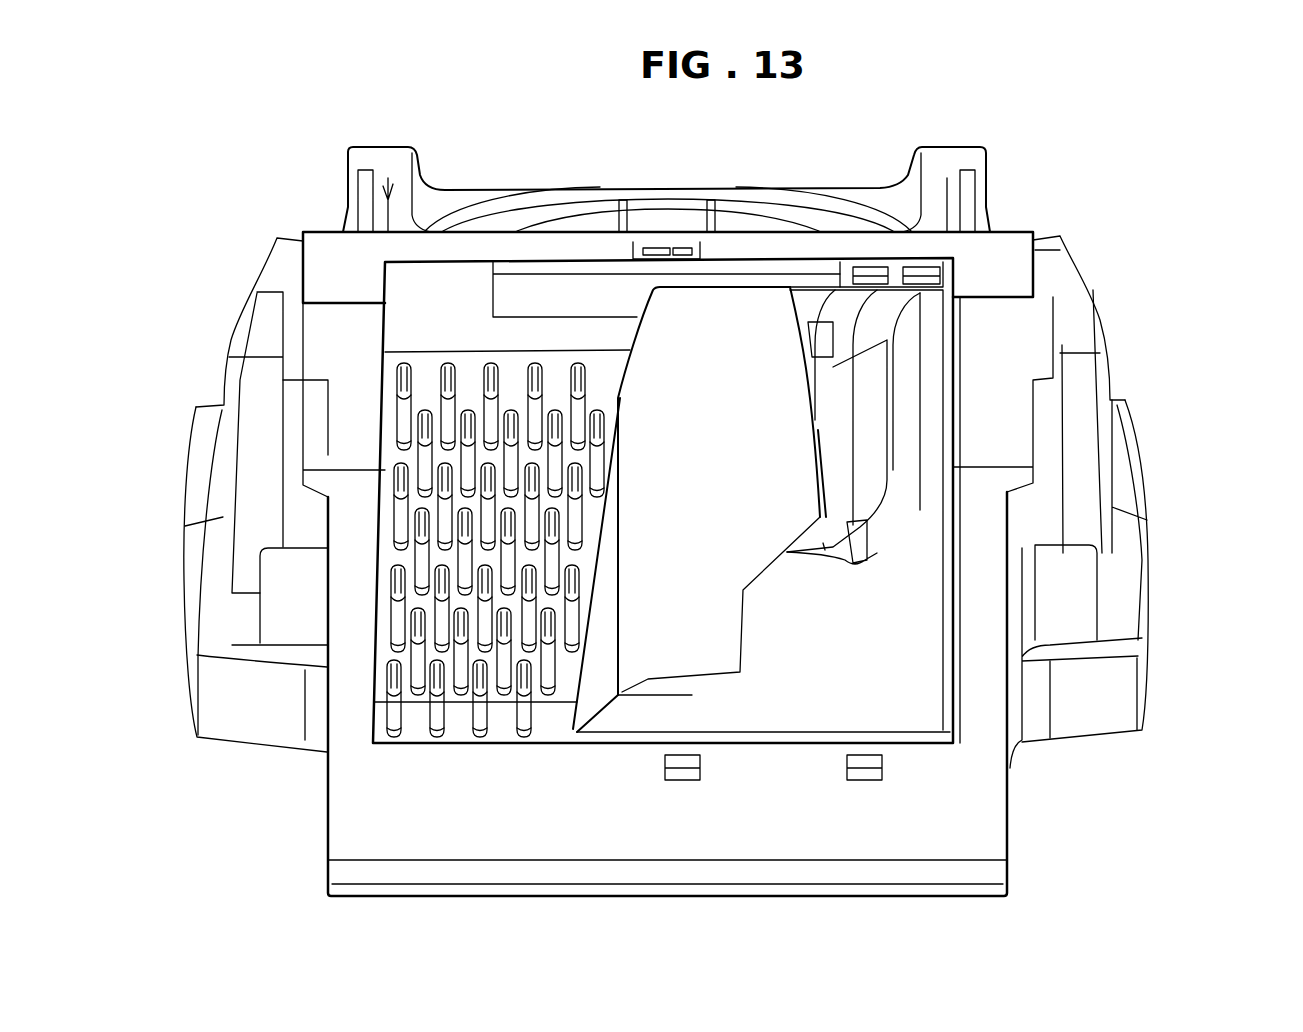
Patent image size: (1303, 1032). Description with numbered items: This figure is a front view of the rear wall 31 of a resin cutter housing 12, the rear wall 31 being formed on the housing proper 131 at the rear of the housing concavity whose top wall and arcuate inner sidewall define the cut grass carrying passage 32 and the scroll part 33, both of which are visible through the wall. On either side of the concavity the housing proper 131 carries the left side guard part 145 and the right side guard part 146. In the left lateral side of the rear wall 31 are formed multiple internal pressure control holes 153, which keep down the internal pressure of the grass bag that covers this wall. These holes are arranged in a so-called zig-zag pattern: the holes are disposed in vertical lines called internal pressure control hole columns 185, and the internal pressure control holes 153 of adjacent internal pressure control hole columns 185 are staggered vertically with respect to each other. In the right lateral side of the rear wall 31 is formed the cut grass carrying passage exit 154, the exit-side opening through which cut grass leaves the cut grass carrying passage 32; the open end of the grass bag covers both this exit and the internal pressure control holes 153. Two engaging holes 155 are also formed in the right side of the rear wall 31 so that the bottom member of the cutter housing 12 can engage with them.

The cutter housing 12 is at (158, 135).
The housing proper 131 is at (205, 245).
The left side guard part 145 is at (182, 535).
The right side guard part 146 is at (1155, 546).
The rear wall 31 is at (958, 800).
The cut grass carrying passage 32 is at (717, 335).
The scroll part 33 is at (932, 394).
The internal pressure control holes 153 is at (394, 745).
The cut grass carrying passage exit 154 is at (941, 678).
The engaging holes 155 is at (690, 782).
The internal pressure control hole columns 185 is at (407, 345).